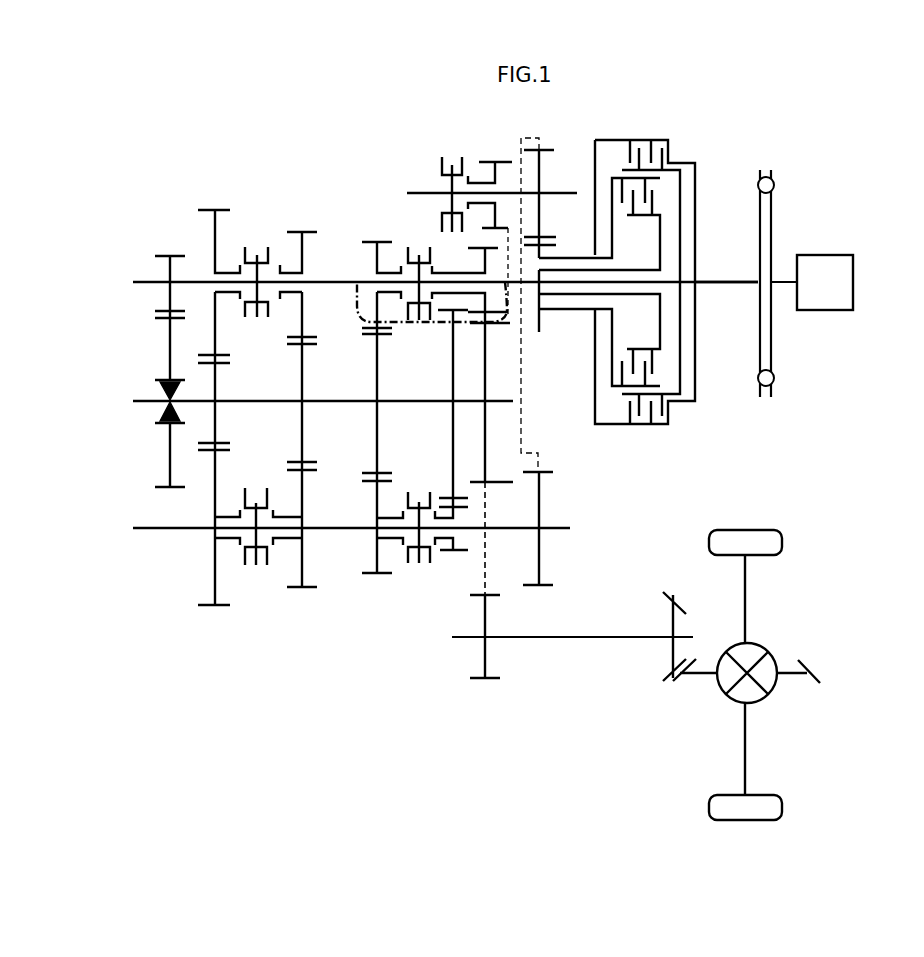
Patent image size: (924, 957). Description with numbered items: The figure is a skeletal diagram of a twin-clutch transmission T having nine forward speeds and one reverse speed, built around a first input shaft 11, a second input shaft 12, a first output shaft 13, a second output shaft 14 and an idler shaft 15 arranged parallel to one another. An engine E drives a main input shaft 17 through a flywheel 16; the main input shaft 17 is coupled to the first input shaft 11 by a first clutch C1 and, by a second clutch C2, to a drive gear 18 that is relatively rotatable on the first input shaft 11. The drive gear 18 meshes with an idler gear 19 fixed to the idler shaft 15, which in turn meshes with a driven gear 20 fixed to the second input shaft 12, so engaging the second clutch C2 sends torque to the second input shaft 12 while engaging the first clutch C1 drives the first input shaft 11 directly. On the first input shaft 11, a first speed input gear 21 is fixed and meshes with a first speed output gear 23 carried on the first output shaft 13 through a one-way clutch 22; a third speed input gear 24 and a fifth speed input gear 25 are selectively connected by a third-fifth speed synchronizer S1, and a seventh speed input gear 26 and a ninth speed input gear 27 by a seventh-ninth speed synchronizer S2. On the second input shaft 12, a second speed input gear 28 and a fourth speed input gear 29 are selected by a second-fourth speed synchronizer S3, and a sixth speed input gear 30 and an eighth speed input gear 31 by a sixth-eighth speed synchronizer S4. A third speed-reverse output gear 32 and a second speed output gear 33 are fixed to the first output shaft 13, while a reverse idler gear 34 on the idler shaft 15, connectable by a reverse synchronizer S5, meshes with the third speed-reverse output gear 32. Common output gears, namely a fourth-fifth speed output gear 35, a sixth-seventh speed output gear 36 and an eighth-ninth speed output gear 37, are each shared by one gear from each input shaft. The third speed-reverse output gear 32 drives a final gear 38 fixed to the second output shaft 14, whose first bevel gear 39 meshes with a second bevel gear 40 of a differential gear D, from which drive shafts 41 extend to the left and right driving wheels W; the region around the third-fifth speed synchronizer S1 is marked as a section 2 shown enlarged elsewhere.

The section 2 is at (508, 298).
The first input shaft 11 is at (360, 278).
The second input shaft 12 is at (352, 527).
The first output shaft 13 is at (316, 400).
The second output shaft 14 is at (563, 636).
The idler shaft 15 is at (423, 191).
The flywheel 16 is at (762, 168).
The main input shaft 17 is at (703, 280).
The drive gear 18 is at (556, 243).
The idler gear 19 is at (545, 148).
The driven gear 20 is at (541, 470).
The first speed input gear 21 is at (168, 254).
The one-way clutch 22 is at (162, 390).
The first speed output gear 23 is at (165, 316).
The third speed input gear 24 is at (470, 250).
The fifth speed input gear 25 is at (378, 240).
The seventh speed input gear 26 is at (300, 230).
The ninth speed input gear 27 is at (213, 208).
The second speed input gear 28 is at (455, 552).
The fourth speed input gear 29 is at (378, 575).
The sixth speed input gear 30 is at (300, 589).
The eighth speed input gear 31 is at (213, 606).
The third speed-reverse output gear 32 is at (494, 326).
The second speed output gear 33 is at (449, 312).
The reverse idler gear 34 is at (496, 160).
The fourth-fifth speed output gear 35 is at (382, 336).
The sixth-seventh speed output gear 36 is at (314, 342).
The eighth-ninth speed output gear 37 is at (228, 360).
The final gear 38 is at (489, 593).
The first bevel gear 39 is at (668, 596).
The second bevel gear 40 is at (692, 661).
The drive shafts 41 is at (747, 613).
The twin-clutch transmission T is at (350, 166).
The third-fifth speed synchronizer S1 is at (420, 260).
The seventh-ninth speed synchronizer S2 is at (257, 262).
The second-fourth speed synchronizer S3 is at (419, 504).
The sixth-eighth speed synchronizer S4 is at (256, 505).
The reverse synchronizer S5 is at (451, 165).
The first clutch C1 is at (684, 156).
The second clutch C2 is at (676, 201).
The differential gear D is at (752, 652).
The driving wheels W is at (738, 534).
The engine E is at (812, 282).